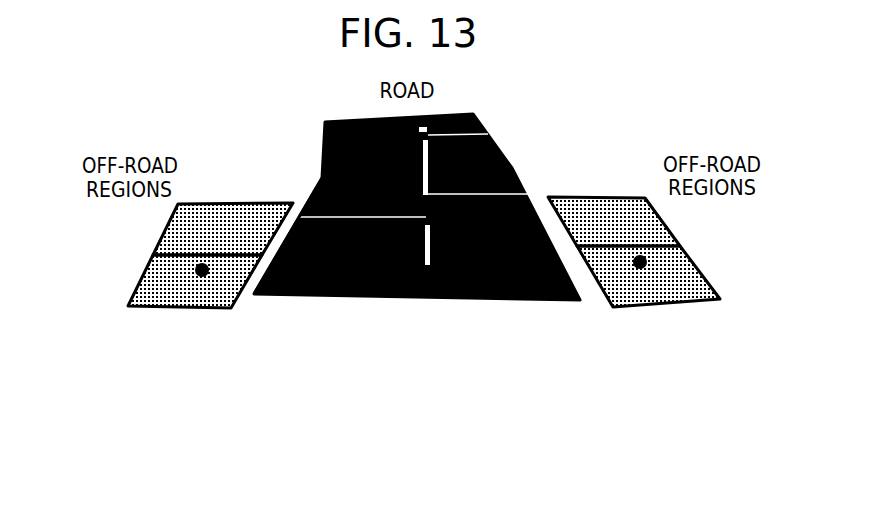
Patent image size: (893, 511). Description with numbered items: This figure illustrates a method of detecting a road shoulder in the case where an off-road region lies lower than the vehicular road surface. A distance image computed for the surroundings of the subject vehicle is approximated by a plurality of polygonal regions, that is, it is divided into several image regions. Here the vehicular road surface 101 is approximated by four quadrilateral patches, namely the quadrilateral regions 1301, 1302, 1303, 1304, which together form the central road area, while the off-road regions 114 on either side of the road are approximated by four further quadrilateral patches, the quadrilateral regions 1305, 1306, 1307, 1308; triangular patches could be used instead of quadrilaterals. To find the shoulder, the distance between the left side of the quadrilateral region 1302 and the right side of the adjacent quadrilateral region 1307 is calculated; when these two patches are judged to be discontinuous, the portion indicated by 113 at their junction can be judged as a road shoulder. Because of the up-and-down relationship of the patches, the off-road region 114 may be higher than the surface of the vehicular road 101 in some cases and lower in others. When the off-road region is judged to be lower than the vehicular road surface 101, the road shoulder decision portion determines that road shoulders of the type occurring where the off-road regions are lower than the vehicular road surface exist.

The vehicular road surface 101 is at (328, 129).
The road shoulder portion 113 is at (257, 296).
The off-road region 114 is at (196, 268).
The quadrilateral region 1301 is at (497, 296).
The quadrilateral region 1302 is at (352, 294).
The quadrilateral region 1303 is at (325, 177).
The quadrilateral region 1304 is at (489, 140).
The quadrilateral region 1305 is at (657, 288).
The quadrilateral region 1306 is at (604, 214).
The quadrilateral region 1307 is at (167, 295).
The quadrilateral region 1308 is at (203, 224).